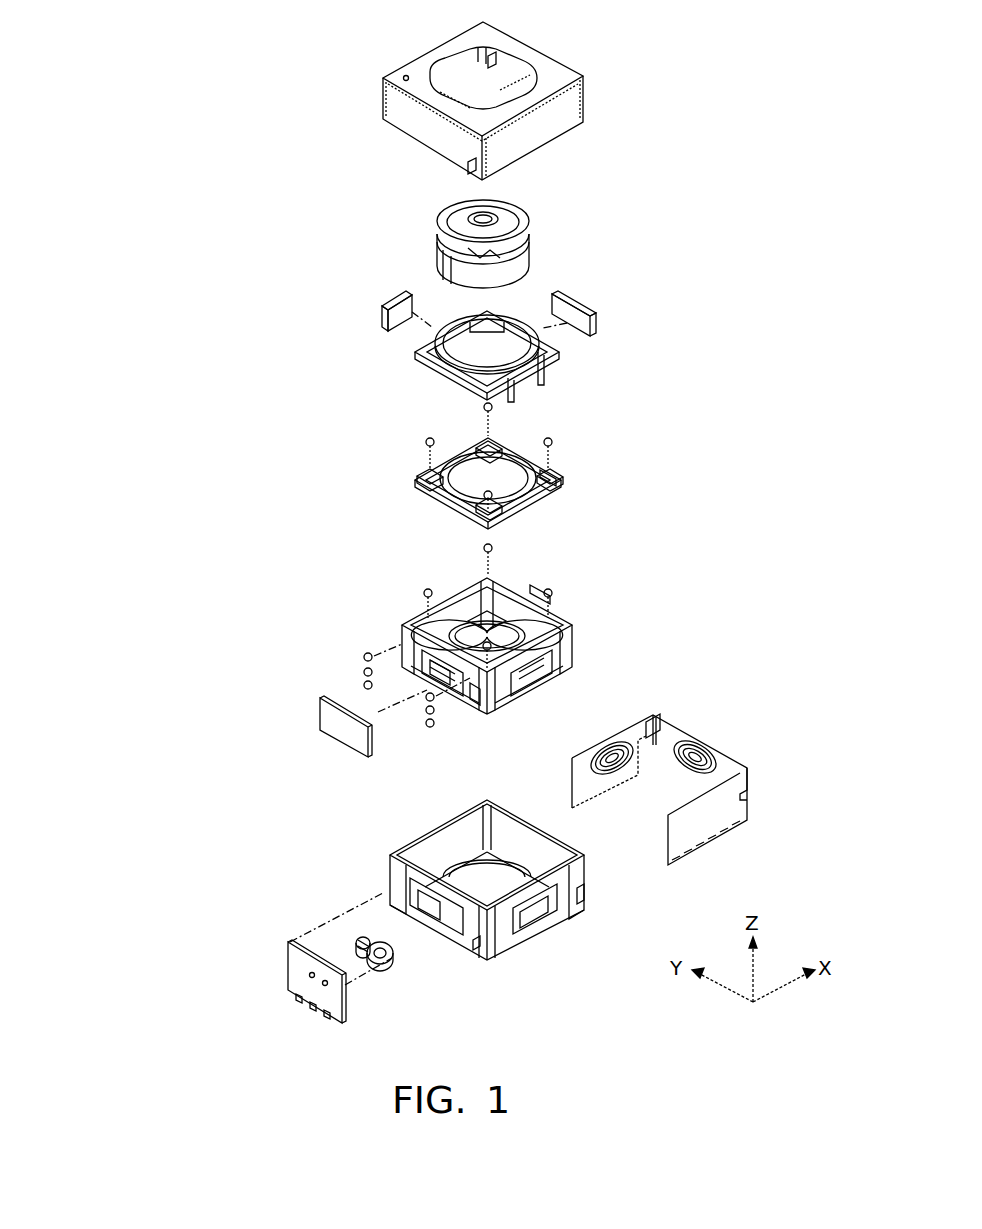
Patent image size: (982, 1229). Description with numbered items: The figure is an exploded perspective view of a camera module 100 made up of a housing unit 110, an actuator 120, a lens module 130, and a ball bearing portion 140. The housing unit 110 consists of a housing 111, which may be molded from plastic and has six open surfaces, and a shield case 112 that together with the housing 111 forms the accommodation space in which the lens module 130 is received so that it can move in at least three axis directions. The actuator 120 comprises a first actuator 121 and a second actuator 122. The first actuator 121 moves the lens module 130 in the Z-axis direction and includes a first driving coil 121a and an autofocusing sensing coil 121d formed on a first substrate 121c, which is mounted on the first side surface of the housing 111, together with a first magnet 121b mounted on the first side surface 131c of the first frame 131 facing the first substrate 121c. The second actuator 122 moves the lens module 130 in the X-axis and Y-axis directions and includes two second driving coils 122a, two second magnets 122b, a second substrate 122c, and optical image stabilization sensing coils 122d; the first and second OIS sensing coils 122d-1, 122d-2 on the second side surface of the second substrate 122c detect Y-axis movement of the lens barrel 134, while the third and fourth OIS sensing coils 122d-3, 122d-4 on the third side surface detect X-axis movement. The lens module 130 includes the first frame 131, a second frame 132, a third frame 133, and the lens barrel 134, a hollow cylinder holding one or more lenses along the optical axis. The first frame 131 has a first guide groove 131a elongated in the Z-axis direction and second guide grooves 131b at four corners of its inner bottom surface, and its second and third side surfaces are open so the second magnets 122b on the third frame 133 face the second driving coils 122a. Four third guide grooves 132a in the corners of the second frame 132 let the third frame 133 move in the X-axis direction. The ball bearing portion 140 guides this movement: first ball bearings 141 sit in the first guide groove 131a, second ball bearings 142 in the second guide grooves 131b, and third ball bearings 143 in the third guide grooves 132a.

The camera module 100 is at (768, 186).
The housing unit 110 is at (118, 11).
The housing 111 is at (513, 933).
The shield case 112 is at (402, 110).
The actuator 120 is at (183, 150).
The first actuator 121 is at (118, 109).
The first driving coil 121a is at (380, 968).
The first magnet 121b is at (340, 735).
The first substrate 121c is at (288, 960).
The autofocusing (AF) sensing coil 121d is at (345, 943).
The second actuator 122 is at (118, 239).
The second driving coils 122a is at (656, 714).
The second magnets 122b is at (405, 308).
The second substrate 122c is at (596, 800).
The optical image stabilization (OIS) sensing coils 122d is at (118, 505).
The first OIS sensing coil 122d-1 is at (616, 703).
The second OIS sensing coil 122d-2 is at (578, 760).
The third OIS sensing coil 122d-3 is at (698, 742).
The fourth OIS sensing coil 122d-4 is at (720, 752).
The lens module 130 is at (118, 551).
The first frame 131 is at (597, 633).
The first guide groove 131a is at (474, 700).
The second guide grooves 131b is at (540, 570).
The first side surface of the first frame 131c is at (427, 683).
The second frame 132 is at (563, 484).
The third guide grooves 132a is at (560, 469).
The third frame 133 is at (433, 375).
The lens barrel 134 is at (440, 264).
The ball bearing portion 140 is at (118, 702).
The first ball bearings 141 is at (364, 657).
The second ball bearings 142 is at (424, 590).
The third ball bearings 143 is at (423, 437).